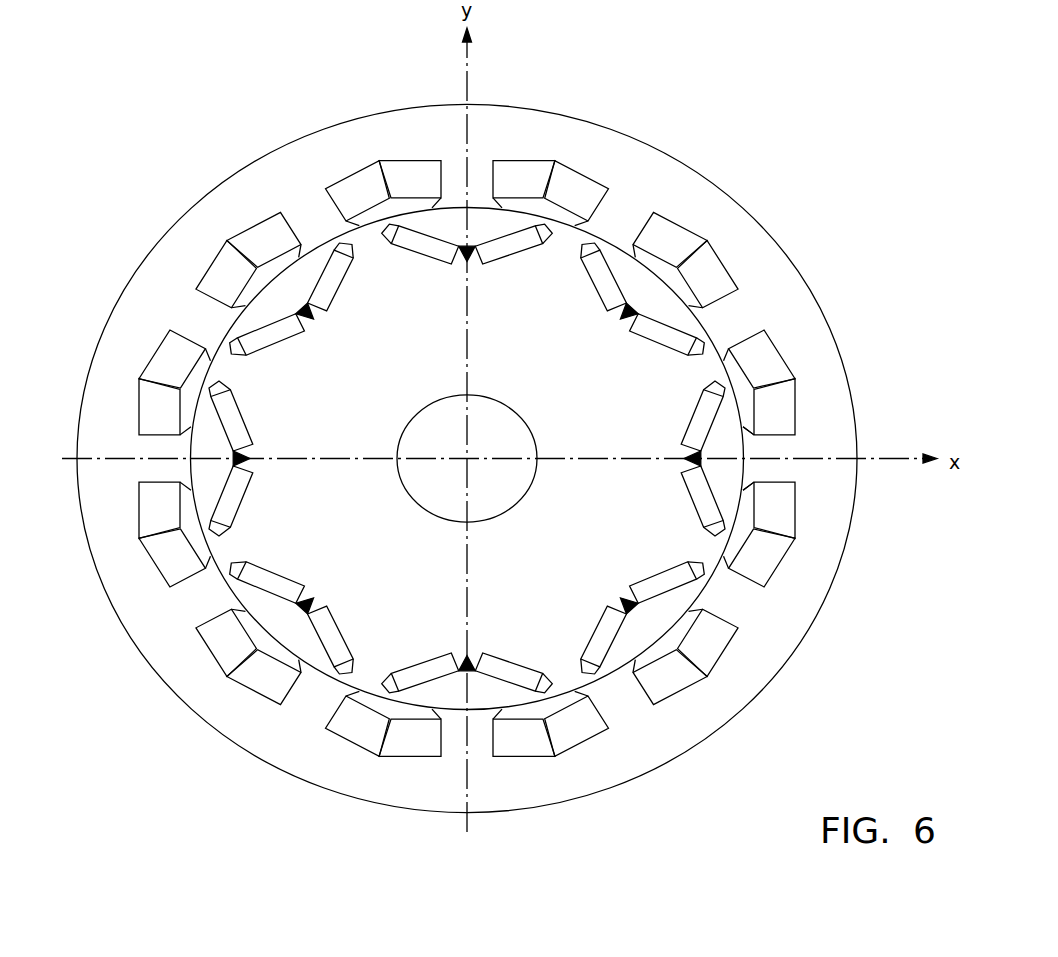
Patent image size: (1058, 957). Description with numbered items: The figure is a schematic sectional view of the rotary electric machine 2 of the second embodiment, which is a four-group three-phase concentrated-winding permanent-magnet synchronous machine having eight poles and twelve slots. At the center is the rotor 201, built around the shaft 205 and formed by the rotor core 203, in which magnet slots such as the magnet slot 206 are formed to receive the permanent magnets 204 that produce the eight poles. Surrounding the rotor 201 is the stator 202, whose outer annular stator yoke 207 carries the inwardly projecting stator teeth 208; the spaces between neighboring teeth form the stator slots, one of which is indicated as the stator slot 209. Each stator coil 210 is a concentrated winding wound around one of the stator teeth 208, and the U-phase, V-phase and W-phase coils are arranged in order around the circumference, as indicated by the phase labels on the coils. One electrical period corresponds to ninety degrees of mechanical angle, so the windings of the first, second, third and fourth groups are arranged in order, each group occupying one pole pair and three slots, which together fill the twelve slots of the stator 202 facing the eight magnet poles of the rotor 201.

The rotary electric machine 2 is at (170, 96).
The rotor 201 is at (201, 307).
The stator 202 is at (201, 168).
The rotor core 203 is at (373, 250).
The permanent magnets 204 is at (667, 330).
The shaft 205 is at (510, 497).
The magnet slot 206 is at (700, 578).
The stator yoke 207 is at (587, 137).
The stator teeth 208 is at (627, 223).
The stator slot 209 is at (745, 413).
The stator coil 210 is at (677, 202).